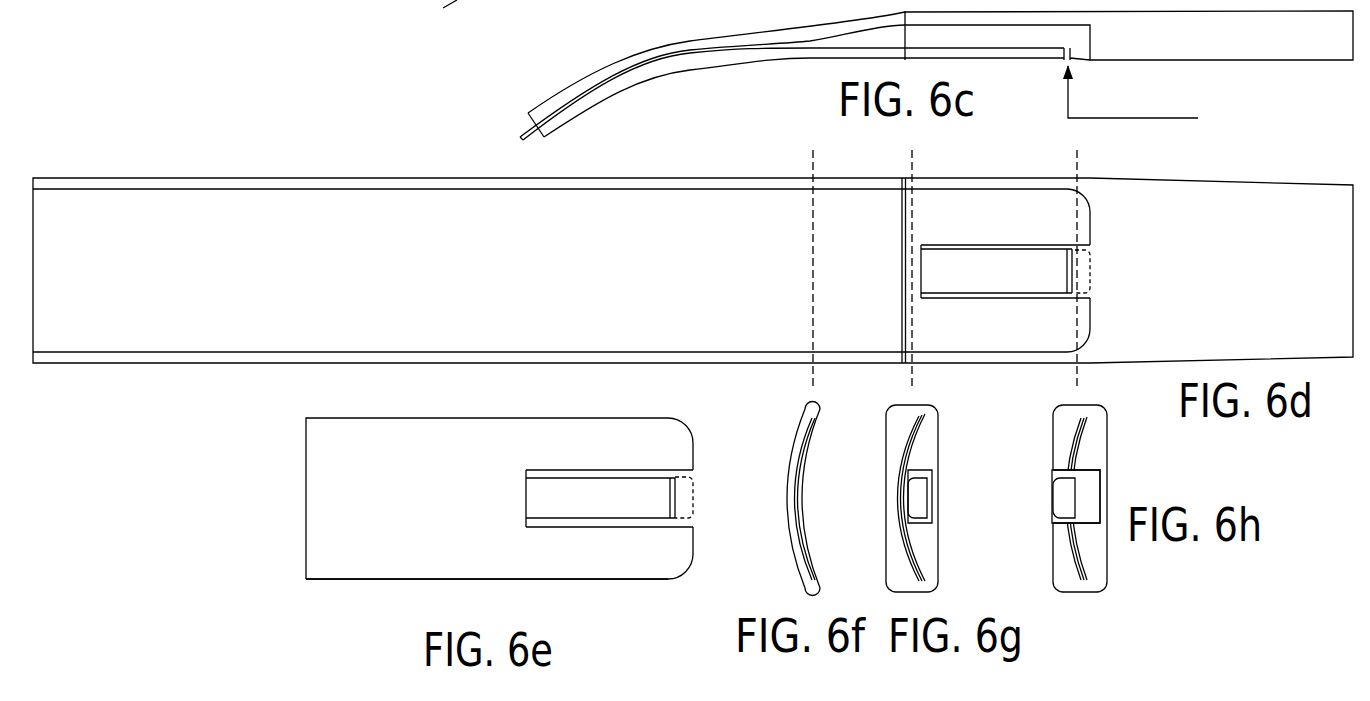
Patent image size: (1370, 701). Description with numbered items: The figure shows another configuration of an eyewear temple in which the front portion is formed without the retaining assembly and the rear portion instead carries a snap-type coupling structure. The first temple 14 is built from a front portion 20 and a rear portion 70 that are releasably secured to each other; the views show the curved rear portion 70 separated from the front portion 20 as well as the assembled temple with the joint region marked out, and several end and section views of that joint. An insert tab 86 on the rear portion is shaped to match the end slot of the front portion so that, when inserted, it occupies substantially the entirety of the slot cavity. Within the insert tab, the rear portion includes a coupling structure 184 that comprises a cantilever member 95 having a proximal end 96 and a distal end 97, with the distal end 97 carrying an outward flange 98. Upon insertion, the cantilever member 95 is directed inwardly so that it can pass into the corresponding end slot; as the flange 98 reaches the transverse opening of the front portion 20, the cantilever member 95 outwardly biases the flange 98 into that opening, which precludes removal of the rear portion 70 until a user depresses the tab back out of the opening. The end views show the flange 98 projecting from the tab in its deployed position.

In FIG. 6D, the first temple 14 is at (289, 168).
In FIG. 6C, the front portion 20 is at (1243, 75).
In FIG. 6C, the rear portion 70 is at (525, 102).
In FIG. 6E, the rear portion 70 is at (394, 589).
In FIG. 6E, the insert tab 86 is at (605, 411).
In FIG. 6E, the coupling structure 184 is at (478, 482).
In FIG. 6E, the cantilever member 95 is at (557, 516).
In FIG. 6E, the proximal end 96 is at (518, 531).
In FIG. 6E, the distal end 97 is at (647, 524).
In FIG. 6D, the outward flange 98 is at (1082, 271).
In FIG. 6E, the outward flange 98 is at (703, 498).
In FIG. 6G, the outward flange 98 is at (930, 492).
In FIG. 6H, the outward flange 98 is at (1060, 503).